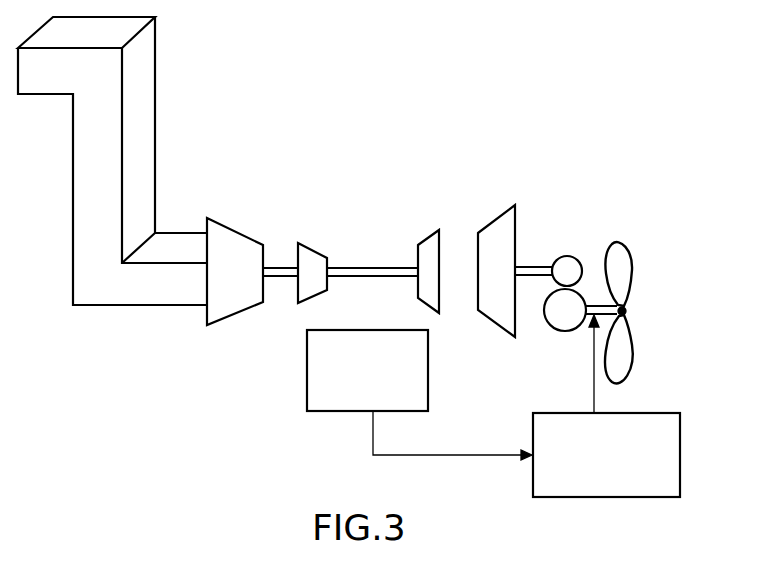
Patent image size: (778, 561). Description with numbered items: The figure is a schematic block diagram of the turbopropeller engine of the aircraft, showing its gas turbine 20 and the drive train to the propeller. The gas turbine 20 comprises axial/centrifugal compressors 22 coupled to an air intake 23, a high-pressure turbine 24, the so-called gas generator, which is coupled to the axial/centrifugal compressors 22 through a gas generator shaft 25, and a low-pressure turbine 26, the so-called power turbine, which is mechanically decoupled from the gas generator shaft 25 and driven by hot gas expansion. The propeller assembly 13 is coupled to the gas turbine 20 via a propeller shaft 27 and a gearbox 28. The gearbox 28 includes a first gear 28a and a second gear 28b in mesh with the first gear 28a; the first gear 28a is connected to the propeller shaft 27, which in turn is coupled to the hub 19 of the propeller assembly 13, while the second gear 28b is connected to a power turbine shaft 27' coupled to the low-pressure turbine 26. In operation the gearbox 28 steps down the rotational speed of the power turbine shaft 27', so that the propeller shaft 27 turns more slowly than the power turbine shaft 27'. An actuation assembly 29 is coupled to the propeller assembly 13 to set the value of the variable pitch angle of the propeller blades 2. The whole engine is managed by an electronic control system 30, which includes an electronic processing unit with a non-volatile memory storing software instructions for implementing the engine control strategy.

The propeller blades 2 is at (628, 268).
The propeller assembly 13 is at (650, 257).
The hub 19 is at (625, 312).
The gas turbine 20 is at (367, 150).
The axial/centrifugal compressors 22 is at (275, 234).
The air intake 23 is at (192, 209).
The high-pressure turbine 24 is at (429, 244).
The gas generator shaft 25 is at (363, 269).
The low-pressure turbine 26 is at (498, 224).
The propeller shaft 27 is at (599, 268).
The power turbine shaft 27' is at (537, 225).
The gearbox 28 is at (547, 328).
The first gear 28a is at (563, 323).
The second gear 28b is at (575, 257).
The actuation assembly 29 is at (680, 446).
The electronic control system 30 is at (428, 385).